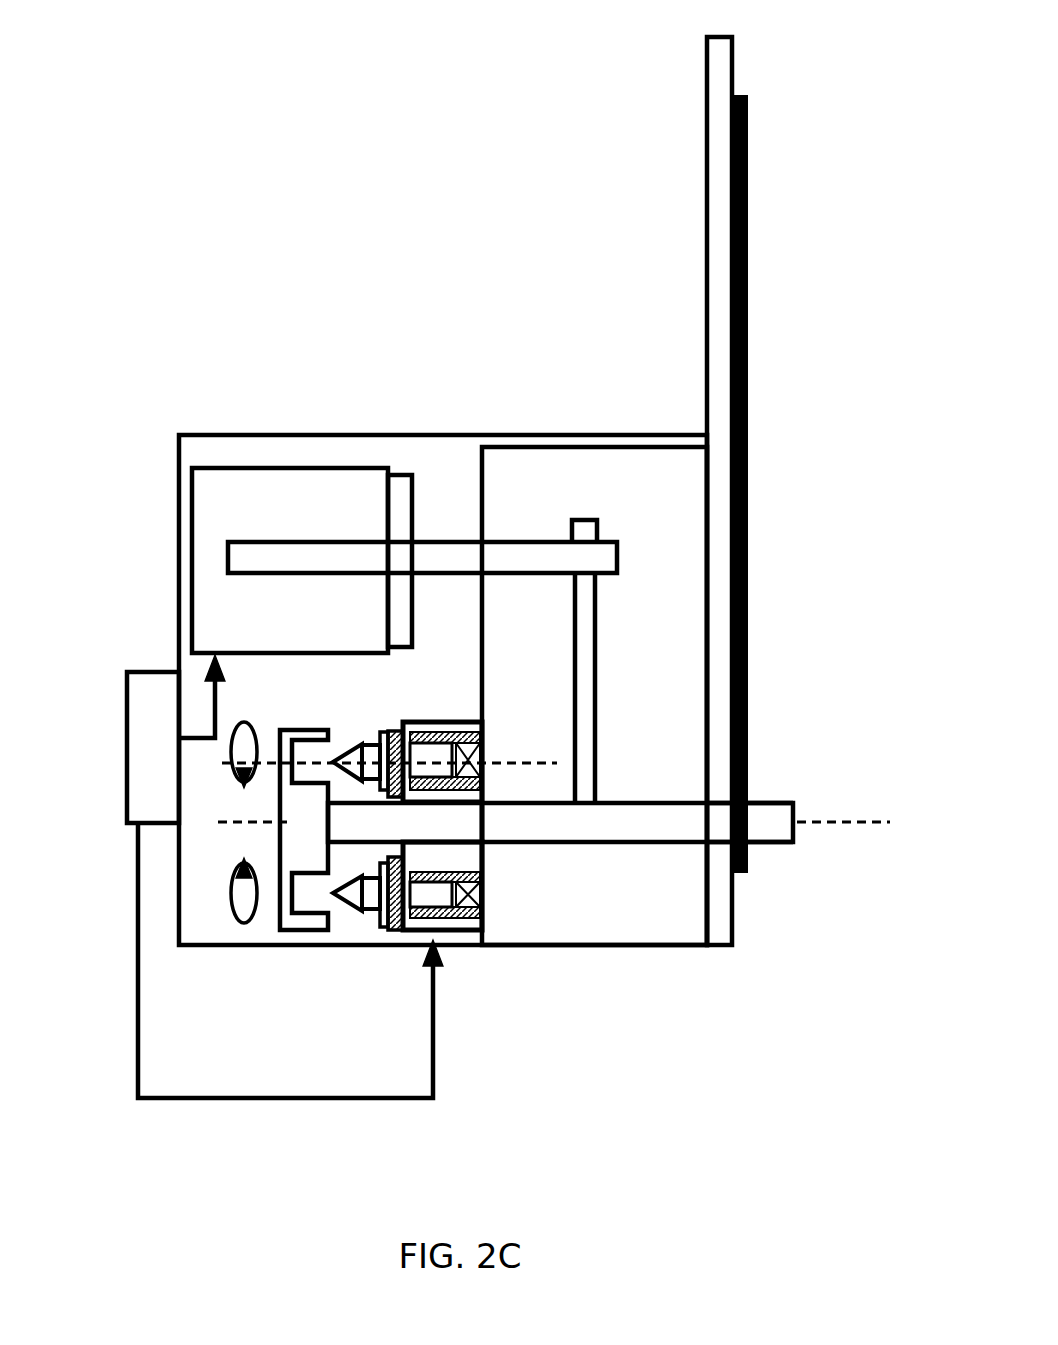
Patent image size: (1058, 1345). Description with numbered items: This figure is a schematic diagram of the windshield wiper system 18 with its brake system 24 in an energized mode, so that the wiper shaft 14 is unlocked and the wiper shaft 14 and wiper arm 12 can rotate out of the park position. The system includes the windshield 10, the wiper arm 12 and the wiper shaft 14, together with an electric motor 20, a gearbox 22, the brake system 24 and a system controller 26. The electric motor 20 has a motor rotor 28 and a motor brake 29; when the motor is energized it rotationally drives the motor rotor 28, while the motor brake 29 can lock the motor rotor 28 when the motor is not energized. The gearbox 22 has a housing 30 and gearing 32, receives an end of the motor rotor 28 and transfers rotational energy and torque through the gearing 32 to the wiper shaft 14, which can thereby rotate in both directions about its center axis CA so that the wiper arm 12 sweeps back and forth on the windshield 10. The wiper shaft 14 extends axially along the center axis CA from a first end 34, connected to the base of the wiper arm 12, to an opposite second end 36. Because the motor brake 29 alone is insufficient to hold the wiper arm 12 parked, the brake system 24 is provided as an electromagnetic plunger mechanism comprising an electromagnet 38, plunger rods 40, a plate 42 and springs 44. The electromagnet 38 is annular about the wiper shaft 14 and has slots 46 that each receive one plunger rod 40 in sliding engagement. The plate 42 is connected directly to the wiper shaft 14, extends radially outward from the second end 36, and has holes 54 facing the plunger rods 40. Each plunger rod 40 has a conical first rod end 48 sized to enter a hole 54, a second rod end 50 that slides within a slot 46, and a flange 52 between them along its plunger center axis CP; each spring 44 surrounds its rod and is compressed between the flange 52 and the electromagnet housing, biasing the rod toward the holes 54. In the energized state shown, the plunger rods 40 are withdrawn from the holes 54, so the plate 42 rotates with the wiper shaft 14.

The windshield 10 is at (722, 77).
The wiper arm 12 is at (752, 378).
The wiper shaft 14 is at (736, 827).
The windshield wiper system 18 is at (163, 375).
The electric motor 20 is at (287, 505).
The gearbox 22 is at (638, 478).
The brake system 24 is at (330, 692).
The system controller 26 is at (150, 760).
The motor rotor 28 is at (444, 555).
The motor brake 29 is at (401, 482).
The housing 30 is at (662, 947).
The gearing 32 is at (587, 712).
The first end 34 is at (765, 800).
The second end 36 is at (360, 822).
The electromagnet 38 is at (458, 930).
The plunger rods 40 is at (397, 735).
The plate 42 is at (303, 848).
The springs 44 is at (389, 925).
The slots 46 is at (485, 893).
The first rod end 48 is at (357, 768).
The second rod end 50 is at (452, 762).
The flange 52 is at (382, 925).
The holes 54 is at (305, 905).
The plunger center axis CP is at (527, 763).
The center axis CA is at (838, 818).